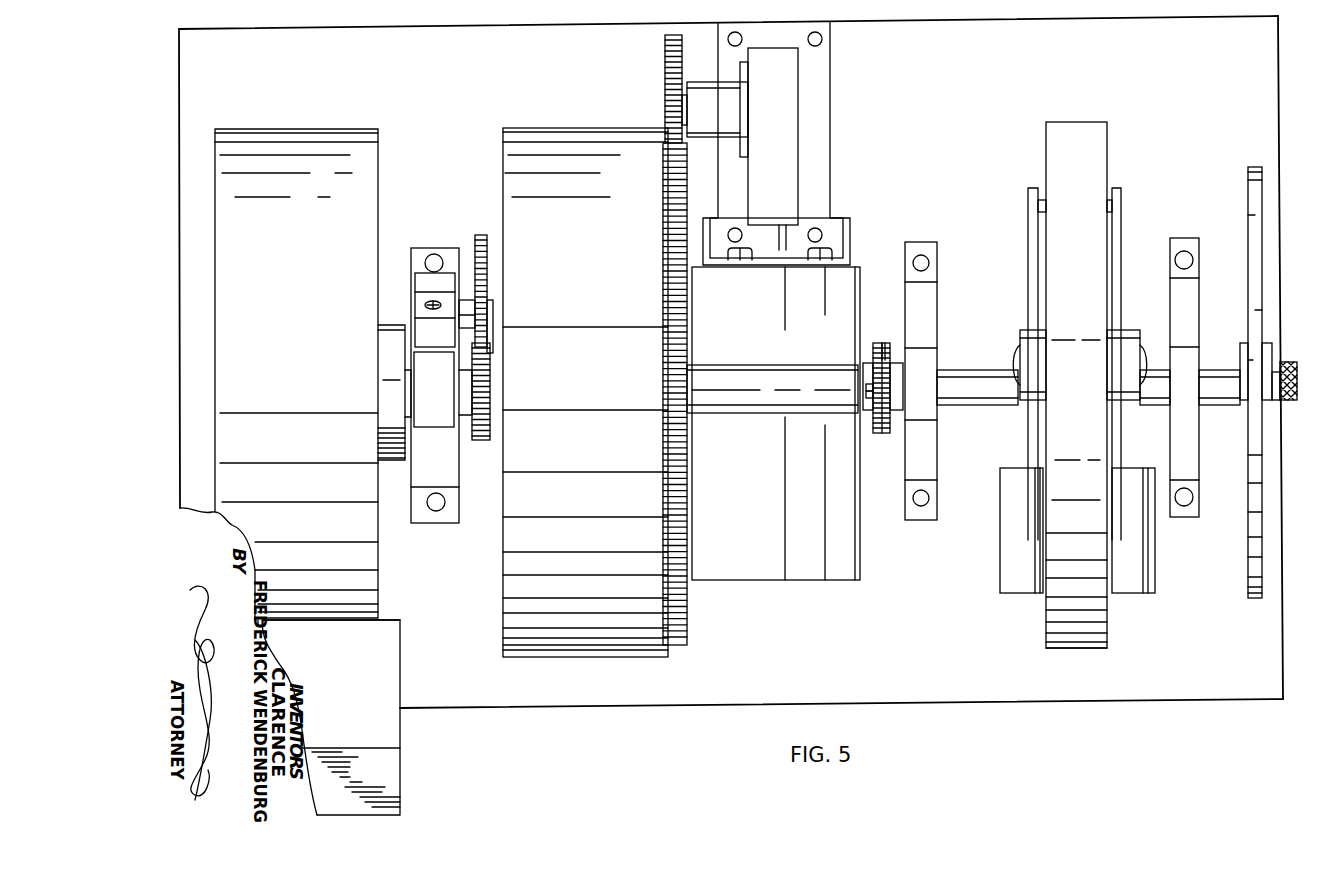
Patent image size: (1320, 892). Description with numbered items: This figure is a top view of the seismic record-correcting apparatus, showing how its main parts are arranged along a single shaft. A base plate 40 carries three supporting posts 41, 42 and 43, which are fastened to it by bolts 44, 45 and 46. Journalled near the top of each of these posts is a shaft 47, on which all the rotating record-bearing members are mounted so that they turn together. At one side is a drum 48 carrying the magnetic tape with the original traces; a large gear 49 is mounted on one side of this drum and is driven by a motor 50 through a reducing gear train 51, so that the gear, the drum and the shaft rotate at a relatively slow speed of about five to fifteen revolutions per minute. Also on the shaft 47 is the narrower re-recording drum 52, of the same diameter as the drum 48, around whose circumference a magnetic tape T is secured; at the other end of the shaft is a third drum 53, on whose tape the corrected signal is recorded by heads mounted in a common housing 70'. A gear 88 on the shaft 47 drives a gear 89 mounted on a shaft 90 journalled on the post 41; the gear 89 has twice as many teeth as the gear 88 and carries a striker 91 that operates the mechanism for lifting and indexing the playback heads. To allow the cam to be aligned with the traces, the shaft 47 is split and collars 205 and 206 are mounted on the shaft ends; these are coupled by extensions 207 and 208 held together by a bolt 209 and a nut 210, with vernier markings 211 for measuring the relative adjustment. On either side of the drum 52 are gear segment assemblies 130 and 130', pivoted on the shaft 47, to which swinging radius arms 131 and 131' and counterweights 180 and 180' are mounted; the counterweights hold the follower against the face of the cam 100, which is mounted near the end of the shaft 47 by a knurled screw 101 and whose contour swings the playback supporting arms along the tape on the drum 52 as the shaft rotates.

The base plate 40 is at (545, 698).
The common housing 70' is at (354, 717).
The drum 53 is at (297, 133).
The supporting post 41 is at (418, 520).
The bolts 44 is at (434, 256).
The shaft 90 is at (466, 300).
The gear 89 is at (483, 276).
The actuator or striker 91 is at (492, 325).
The gear 88 is at (490, 405).
The drum 48 is at (580, 130).
The reducing gear train 51 is at (665, 70).
The large gear 49 is at (663, 265).
The motor 50 is at (800, 572).
The shaft 47 is at (464, 418).
The collar 205 is at (870, 415).
The extension 207 is at (875, 352).
The vernier markings 211 is at (882, 345).
The extension 208 is at (886, 345).
The bolt 209 is at (866, 388).
The nut 210 is at (866, 397).
The collar 206 is at (903, 405).
The supporting post 42 is at (930, 312).
The bolts 45 is at (929, 262).
The drum 52 is at (1097, 145).
The swinging radius arm 131' is at (1012, 364).
The swinging radius arm 131 is at (1138, 364).
The gear segment assembly 130' is at (1017, 345).
The gear segment assembly 130 is at (1140, 345).
The counterweight 180' is at (1001, 548).
The counterweight 180 is at (1147, 549).
The magnetic tape T is at (1055, 638).
The supporting post 43 is at (1199, 340).
The bolts 46 is at (1185, 251).
The cam 100 is at (1252, 168).
The knurled screw 101 is at (1288, 403).